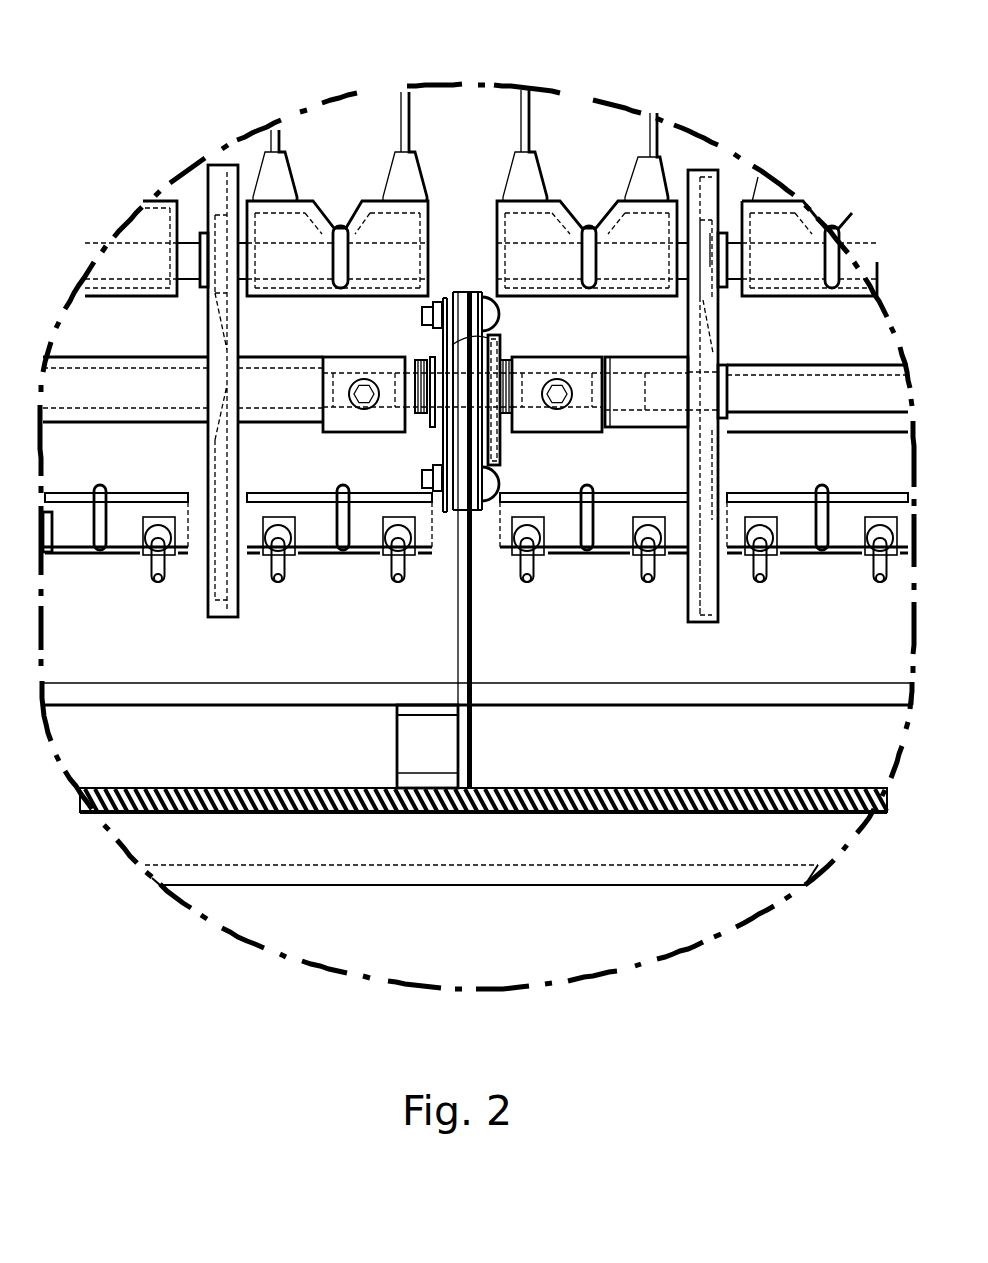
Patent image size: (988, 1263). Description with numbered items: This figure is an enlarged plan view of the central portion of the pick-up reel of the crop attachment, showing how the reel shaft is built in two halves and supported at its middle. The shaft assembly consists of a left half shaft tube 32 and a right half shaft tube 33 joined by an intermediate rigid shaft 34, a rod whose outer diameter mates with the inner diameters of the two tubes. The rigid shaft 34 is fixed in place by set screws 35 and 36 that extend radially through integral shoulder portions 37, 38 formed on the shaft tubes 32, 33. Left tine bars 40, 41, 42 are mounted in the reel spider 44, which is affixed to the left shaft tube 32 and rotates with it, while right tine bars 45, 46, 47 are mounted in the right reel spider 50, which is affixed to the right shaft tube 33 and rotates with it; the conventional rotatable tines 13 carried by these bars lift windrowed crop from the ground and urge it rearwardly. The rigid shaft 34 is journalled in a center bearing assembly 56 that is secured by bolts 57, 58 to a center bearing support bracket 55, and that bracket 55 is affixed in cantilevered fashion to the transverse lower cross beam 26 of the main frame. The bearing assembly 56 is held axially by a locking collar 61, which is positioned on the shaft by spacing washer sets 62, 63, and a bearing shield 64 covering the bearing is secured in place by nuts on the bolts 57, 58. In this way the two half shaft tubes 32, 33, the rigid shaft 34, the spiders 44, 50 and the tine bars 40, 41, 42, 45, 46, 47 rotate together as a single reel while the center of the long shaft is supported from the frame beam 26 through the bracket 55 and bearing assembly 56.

The tines 13 is at (653, 125).
The transverse lower cross beam 26 is at (507, 887).
The left half shaft tube 32 is at (168, 423).
The right half shaft tube 33 is at (744, 360).
The intermediate rigid shaft 34 is at (630, 400).
The set screw 35 is at (348, 405).
The set screw 36 is at (557, 412).
The integral shoulder portion 37 is at (350, 362).
The integral shoulder portion 38 is at (588, 427).
The left tine bar 40 is at (128, 527).
The left tine bar 41 is at (155, 385).
The left tine bar 42 is at (190, 250).
The reel spider 44 is at (222, 168).
The right tine bar 45 is at (612, 532).
The right tine bar 46 is at (800, 390).
The right tine bar 47 is at (735, 257).
The right reel spider 50 is at (703, 178).
The center bearing support bracket 55 is at (465, 650).
The center bearing assembly 56 is at (487, 440).
The bolt 57 is at (489, 292).
The bolt 58 is at (490, 501).
The locking collar 61 is at (435, 438).
The spacing washer set 62 is at (425, 365).
The spacing washer set 63 is at (503, 362).
The bearing shield 64 is at (503, 337).